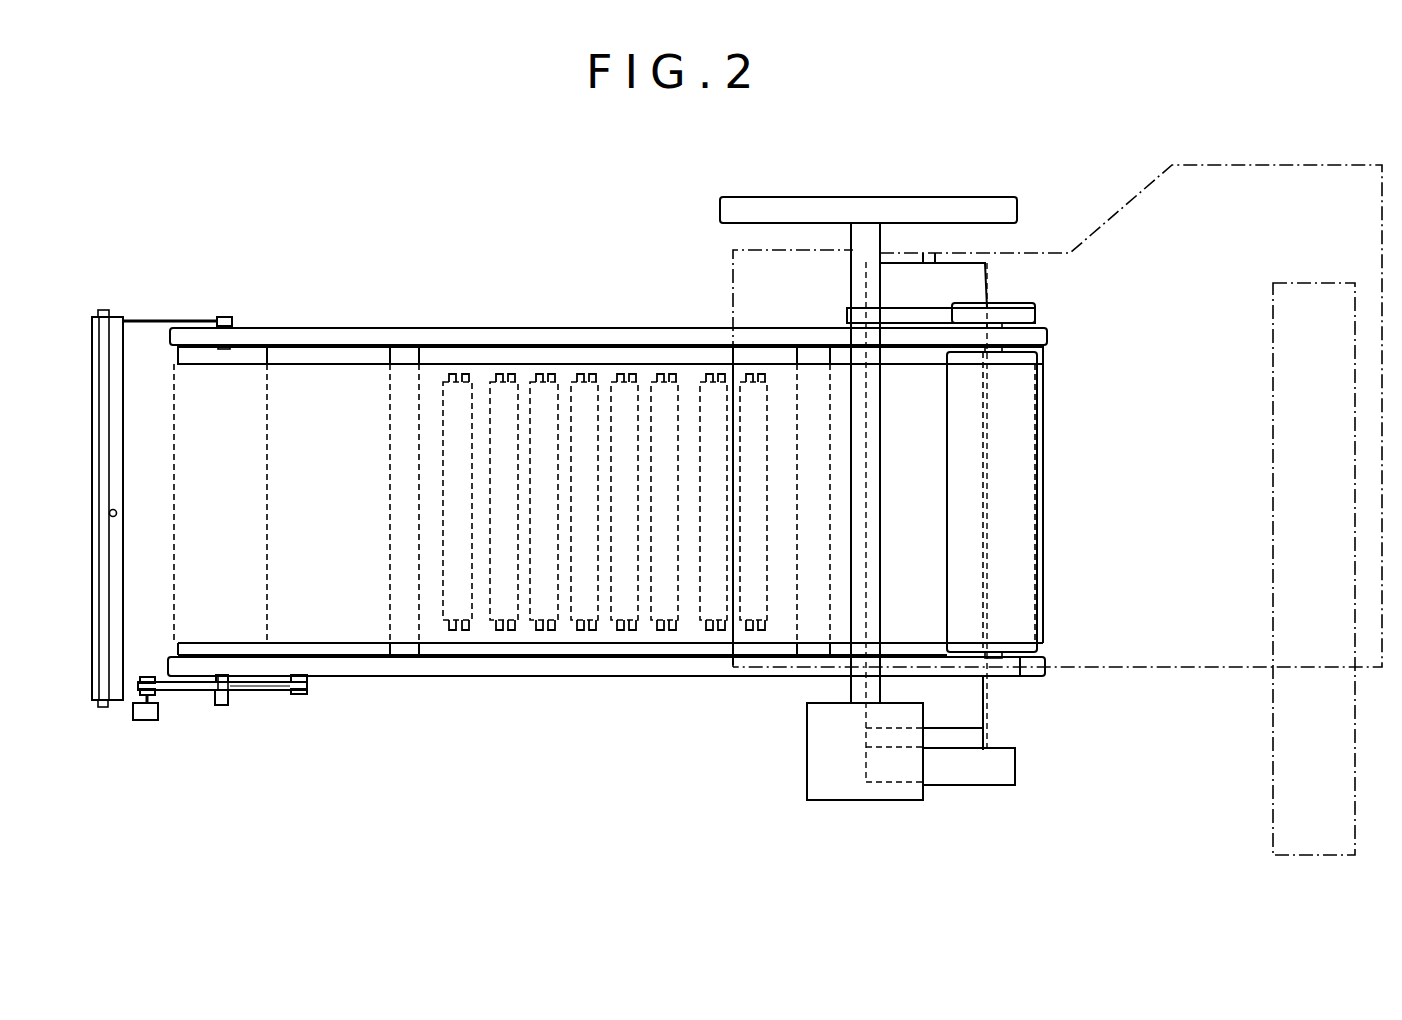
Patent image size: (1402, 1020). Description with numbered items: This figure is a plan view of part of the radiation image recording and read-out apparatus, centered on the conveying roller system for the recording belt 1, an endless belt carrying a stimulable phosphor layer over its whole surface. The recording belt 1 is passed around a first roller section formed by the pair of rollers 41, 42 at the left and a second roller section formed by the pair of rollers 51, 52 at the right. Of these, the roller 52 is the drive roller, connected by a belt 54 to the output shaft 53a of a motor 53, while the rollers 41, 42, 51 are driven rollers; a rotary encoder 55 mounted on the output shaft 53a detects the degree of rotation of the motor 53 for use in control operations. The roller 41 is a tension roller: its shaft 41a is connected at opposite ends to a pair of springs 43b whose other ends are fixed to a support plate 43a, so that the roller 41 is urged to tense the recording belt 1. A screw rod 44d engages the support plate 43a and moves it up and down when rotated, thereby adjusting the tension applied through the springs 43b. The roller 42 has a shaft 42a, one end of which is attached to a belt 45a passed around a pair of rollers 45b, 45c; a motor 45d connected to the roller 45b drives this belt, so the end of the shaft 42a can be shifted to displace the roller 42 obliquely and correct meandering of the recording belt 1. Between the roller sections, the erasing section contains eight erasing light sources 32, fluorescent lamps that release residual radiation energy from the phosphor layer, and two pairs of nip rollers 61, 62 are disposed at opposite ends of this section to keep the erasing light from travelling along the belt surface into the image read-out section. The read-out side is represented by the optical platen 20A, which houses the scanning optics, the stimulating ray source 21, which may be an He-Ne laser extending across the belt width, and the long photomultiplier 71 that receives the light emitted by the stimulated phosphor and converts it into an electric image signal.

The recording belt 1 is at (378, 364).
The optical platen 20A is at (1222, 165).
The stimulating ray source 21 is at (1268, 462).
The erasing light sources 32 is at (466, 378).
The roller 41 is at (263, 463).
The roller 42 is at (267, 350).
The shaft 41a is at (225, 317).
The shaft 42a is at (223, 680).
The support plate 43a is at (115, 332).
The springs 43b is at (162, 320).
The screw rod 44d is at (109, 513).
The belt 45a is at (268, 692).
The roller 45b is at (145, 678).
The roller 45c is at (300, 694).
The motor 45d is at (147, 722).
The roller 51 is at (1031, 532).
The roller 52 is at (1020, 677).
The motor 53 is at (975, 205).
The output shaft 53a is at (851, 241).
The belt 54 is at (920, 310).
The rotary encoder 55 is at (843, 800).
The nip rollers 61 is at (415, 657).
The nip rollers 62 is at (800, 658).
The photomultiplier 71 is at (983, 712).